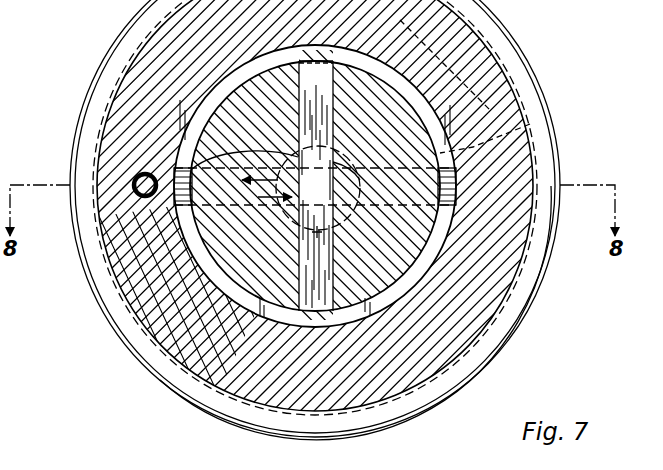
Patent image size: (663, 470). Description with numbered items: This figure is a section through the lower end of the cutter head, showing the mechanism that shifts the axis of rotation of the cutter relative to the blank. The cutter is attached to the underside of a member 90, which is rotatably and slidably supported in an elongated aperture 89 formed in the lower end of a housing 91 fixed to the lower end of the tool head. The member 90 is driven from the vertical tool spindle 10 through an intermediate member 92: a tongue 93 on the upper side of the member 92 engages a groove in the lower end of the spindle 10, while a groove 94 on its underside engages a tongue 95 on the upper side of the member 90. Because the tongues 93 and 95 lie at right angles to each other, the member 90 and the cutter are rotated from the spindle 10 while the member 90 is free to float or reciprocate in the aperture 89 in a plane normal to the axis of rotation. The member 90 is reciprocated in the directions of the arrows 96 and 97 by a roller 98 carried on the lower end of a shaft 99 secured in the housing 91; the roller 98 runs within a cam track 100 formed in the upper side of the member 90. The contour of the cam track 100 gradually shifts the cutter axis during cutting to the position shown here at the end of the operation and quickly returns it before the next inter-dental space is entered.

The tool spindle 10 is at (284, 316).
The elongated aperture 89 is at (135, 236).
The member 90 is at (253, 303).
The housing 91 is at (97, 83).
The member 92 is at (530, 124).
The tongue 93 is at (300, 63).
The groove 94 is at (315, 201).
The tongue 95 is at (276, 164).
The arrow 96 is at (318, 188).
The arrow 97 is at (315, 203).
The roller 98 is at (132, 177).
The shaft 99 is at (112, 242).
The cam track 100 is at (458, 3).